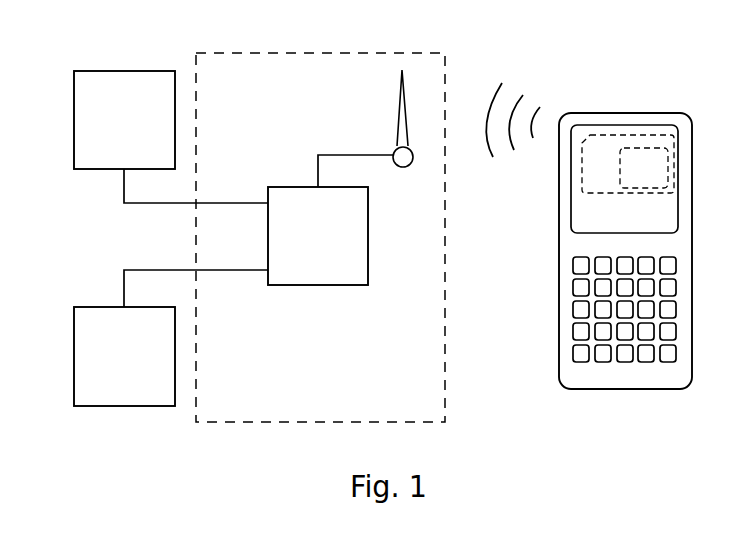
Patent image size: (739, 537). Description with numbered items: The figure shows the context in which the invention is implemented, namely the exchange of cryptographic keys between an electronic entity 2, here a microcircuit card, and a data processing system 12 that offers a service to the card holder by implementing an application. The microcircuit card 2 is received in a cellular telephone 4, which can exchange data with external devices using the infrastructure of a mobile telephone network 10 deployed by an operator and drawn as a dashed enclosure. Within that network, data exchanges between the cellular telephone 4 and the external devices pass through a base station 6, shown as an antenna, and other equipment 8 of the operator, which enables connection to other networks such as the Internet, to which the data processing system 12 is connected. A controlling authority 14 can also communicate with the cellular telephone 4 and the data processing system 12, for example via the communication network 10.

The electronic entity 2 is at (663, 178).
The cellular telephone 4 is at (556, 347).
The base station 6 is at (399, 118).
The other equipment 8 is at (318, 277).
The mobile telephone network 10 is at (196, 53).
The data processing system 12 is at (74, 71).
The controlling authority 14 is at (74, 307).